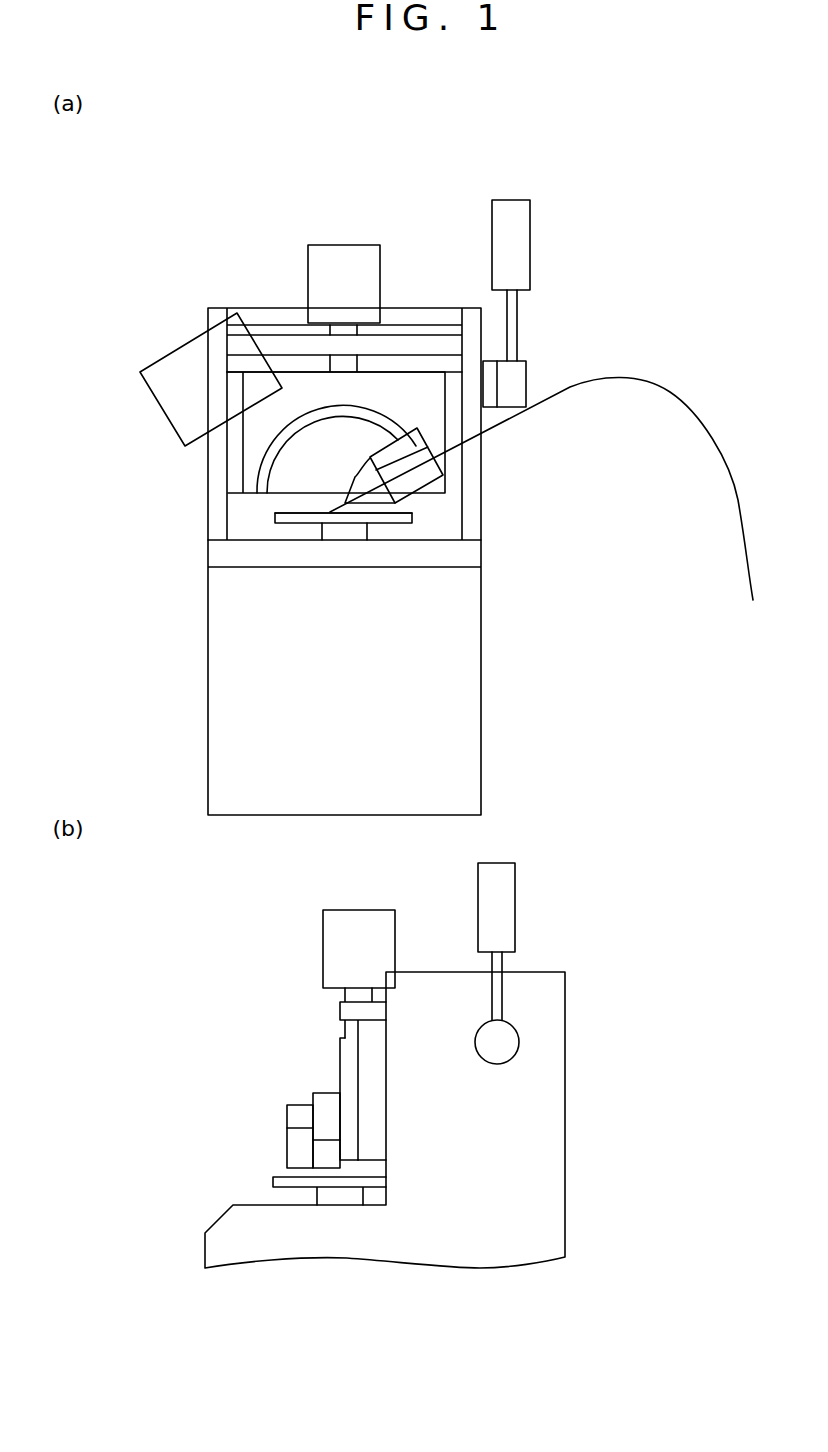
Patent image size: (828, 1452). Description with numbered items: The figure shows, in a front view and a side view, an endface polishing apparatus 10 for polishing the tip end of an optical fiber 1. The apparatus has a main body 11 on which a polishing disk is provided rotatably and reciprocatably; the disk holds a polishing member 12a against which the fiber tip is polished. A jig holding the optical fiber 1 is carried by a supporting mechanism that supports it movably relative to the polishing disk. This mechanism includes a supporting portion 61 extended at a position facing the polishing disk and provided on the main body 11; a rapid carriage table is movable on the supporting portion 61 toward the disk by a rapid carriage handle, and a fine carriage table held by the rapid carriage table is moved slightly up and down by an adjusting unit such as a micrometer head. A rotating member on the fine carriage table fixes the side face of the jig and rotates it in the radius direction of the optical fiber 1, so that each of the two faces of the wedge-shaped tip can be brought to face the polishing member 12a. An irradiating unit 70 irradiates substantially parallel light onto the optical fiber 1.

The optical fiber 1 is at (697, 405).
The endface polishing apparatus 10 is at (415, 220).
The main body 11 is at (470, 732).
The polishing member 12a is at (292, 511).
The supporting portion 61 is at (545, 1073).
The irradiating unit 70 is at (182, 397).